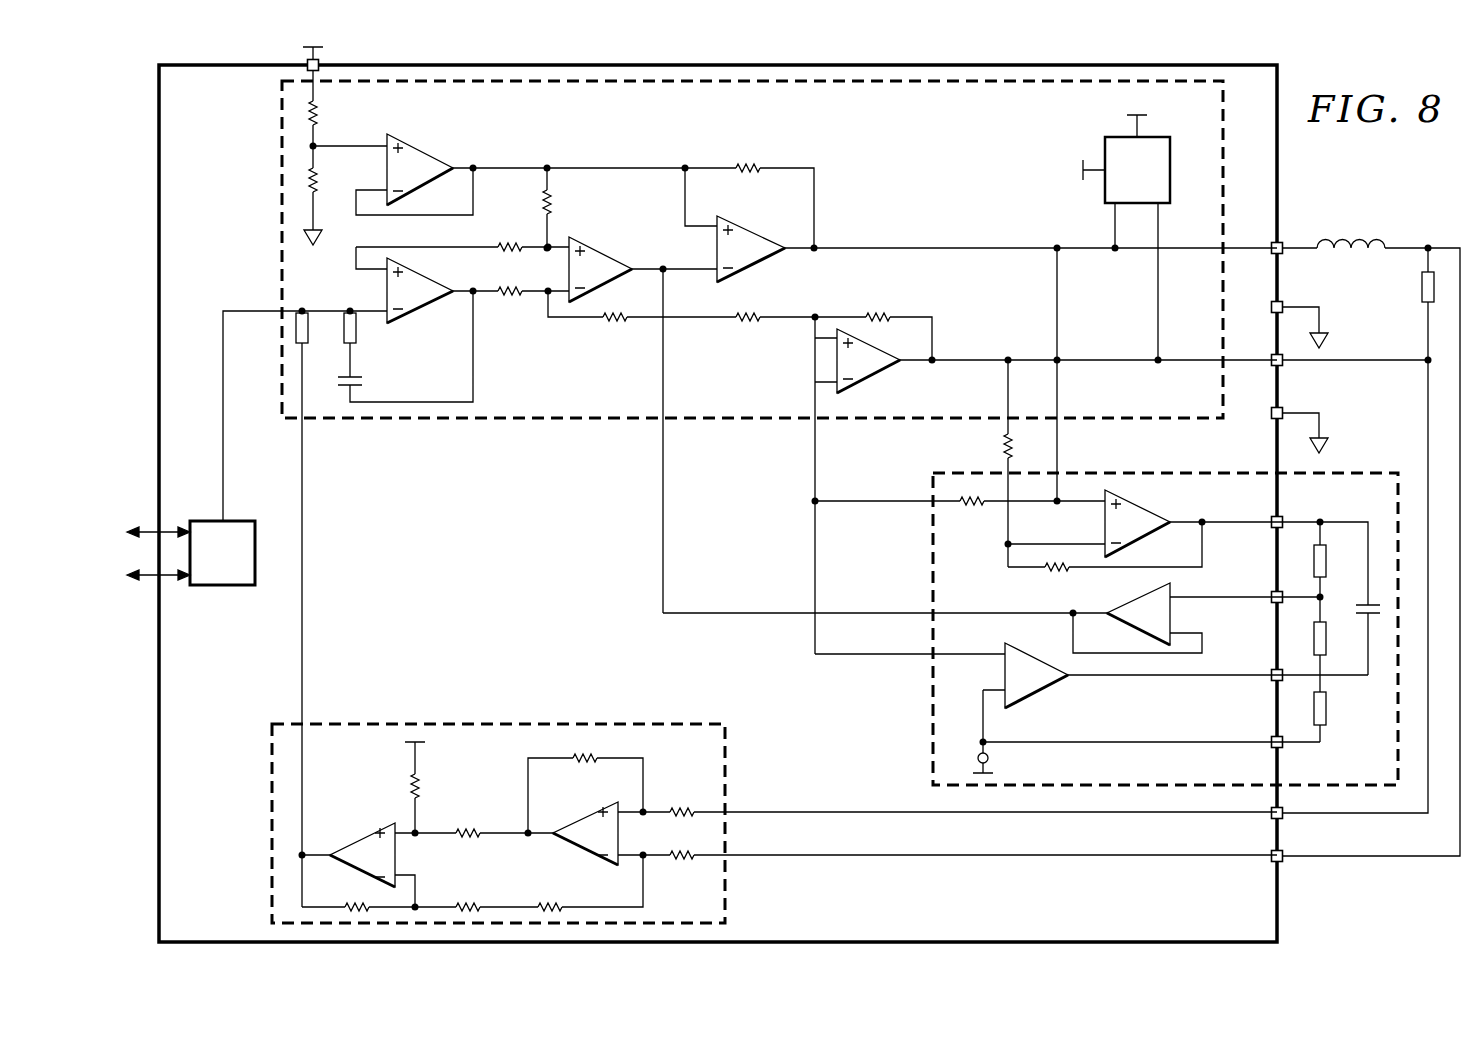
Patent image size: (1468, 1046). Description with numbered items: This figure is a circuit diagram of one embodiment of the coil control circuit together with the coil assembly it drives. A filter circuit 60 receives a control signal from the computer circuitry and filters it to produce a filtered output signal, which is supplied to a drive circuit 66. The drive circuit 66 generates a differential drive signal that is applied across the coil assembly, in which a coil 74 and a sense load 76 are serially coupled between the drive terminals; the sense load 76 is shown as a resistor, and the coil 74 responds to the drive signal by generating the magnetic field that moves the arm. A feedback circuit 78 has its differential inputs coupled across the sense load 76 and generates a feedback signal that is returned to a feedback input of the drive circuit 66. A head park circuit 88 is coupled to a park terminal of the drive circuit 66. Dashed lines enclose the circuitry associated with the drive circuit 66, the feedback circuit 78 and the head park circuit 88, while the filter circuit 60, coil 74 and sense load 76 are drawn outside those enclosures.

The filter circuit 60 is at (210, 565).
The drive circuit 66 is at (1015, 135).
The coil 74 is at (1352, 232).
The sense load 76 is at (1420, 305).
The feedback circuit 78 is at (699, 773).
The head park circuit 88 is at (1387, 753).